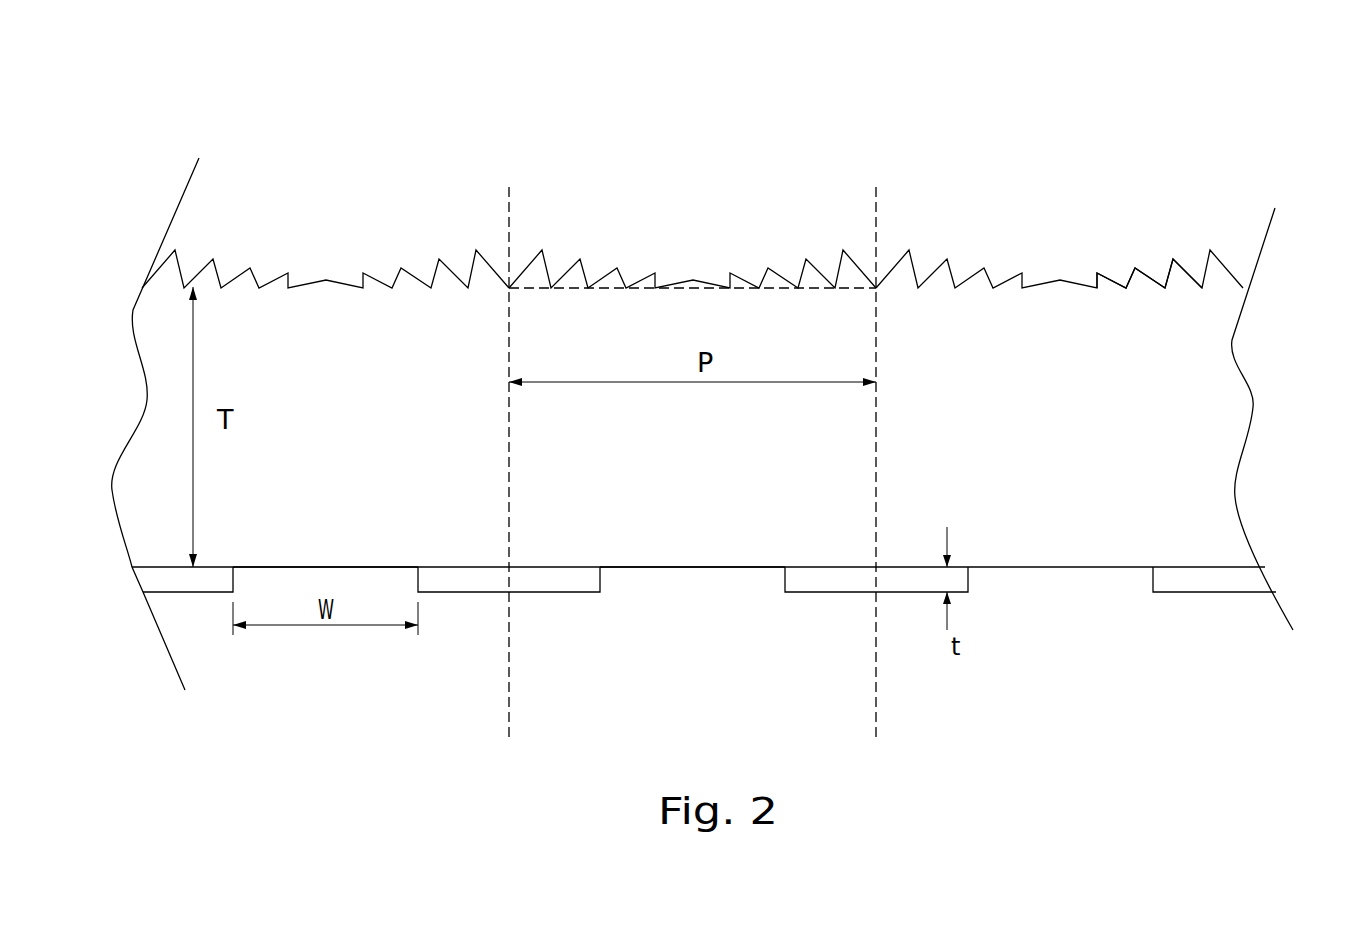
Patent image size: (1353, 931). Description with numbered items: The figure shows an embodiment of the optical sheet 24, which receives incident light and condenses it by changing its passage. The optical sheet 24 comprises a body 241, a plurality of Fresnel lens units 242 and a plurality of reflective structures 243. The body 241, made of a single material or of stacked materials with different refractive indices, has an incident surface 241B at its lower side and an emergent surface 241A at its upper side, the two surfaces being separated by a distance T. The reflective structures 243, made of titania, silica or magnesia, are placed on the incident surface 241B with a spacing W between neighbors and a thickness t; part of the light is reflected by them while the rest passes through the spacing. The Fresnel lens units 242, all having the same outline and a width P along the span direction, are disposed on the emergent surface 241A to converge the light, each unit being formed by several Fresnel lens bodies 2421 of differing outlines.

The optical sheet 24 is at (1198, 736).
The body 241 is at (1167, 350).
The emergent surface 241A is at (338, 193).
The incident surface 241B is at (620, 580).
The Fresnel lens unit 242 is at (877, 173).
The Fresnel lens body 2421 is at (1140, 283).
The reflective structure 243 is at (817, 582).